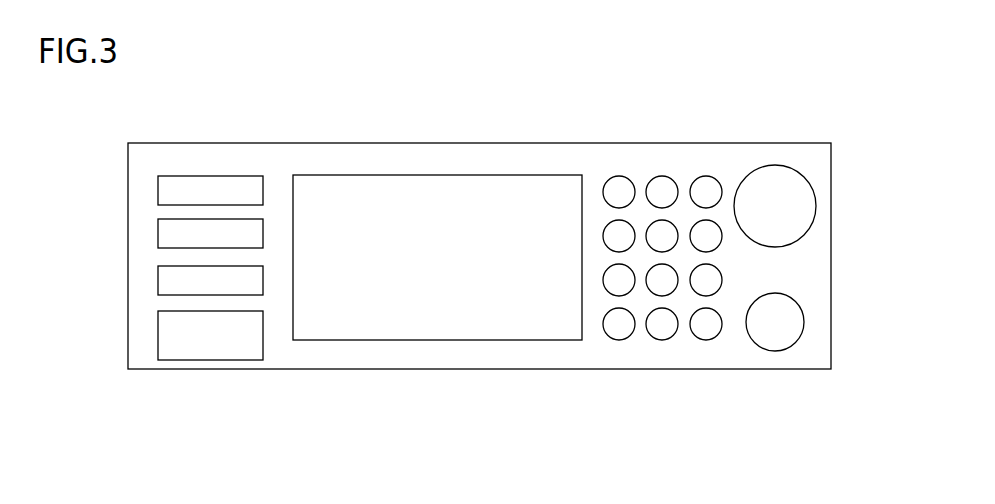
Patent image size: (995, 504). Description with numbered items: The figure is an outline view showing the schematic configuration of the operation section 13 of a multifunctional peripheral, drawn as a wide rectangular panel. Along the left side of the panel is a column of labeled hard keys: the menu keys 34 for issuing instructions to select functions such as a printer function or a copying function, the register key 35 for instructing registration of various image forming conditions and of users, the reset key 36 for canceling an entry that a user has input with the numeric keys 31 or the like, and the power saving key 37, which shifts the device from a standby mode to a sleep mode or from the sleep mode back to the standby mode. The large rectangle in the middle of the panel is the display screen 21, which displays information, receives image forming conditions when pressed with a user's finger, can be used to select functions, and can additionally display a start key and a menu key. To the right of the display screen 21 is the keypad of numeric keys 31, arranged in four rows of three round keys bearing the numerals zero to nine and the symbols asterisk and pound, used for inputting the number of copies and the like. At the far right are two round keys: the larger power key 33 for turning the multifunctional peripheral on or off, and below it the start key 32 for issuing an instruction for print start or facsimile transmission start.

The operation section 13 is at (784, 143).
The display screen 21 is at (539, 175).
The numeric keys 31 is at (706, 163).
The start key 32 is at (804, 318).
The power key 33 is at (816, 201).
The menu keys 34 is at (157, 190).
The register key 35 is at (157, 235).
The reset key 36 is at (157, 282).
The power saving key 37 is at (157, 326).